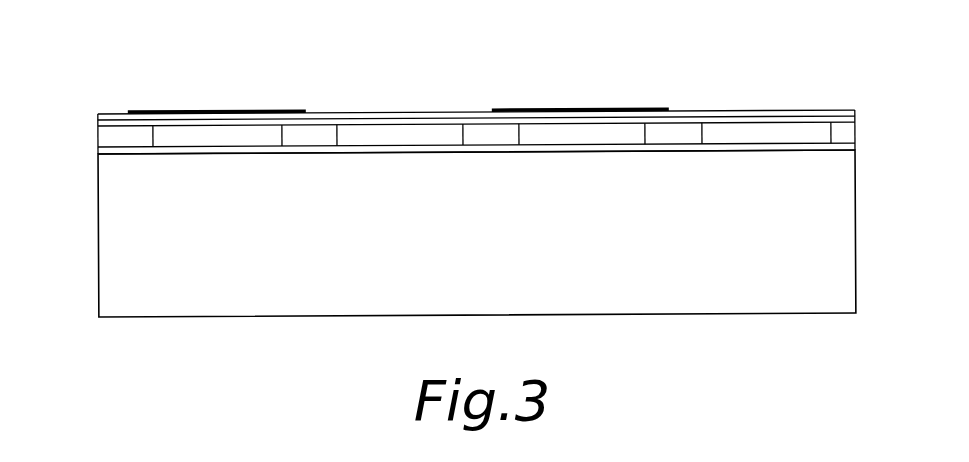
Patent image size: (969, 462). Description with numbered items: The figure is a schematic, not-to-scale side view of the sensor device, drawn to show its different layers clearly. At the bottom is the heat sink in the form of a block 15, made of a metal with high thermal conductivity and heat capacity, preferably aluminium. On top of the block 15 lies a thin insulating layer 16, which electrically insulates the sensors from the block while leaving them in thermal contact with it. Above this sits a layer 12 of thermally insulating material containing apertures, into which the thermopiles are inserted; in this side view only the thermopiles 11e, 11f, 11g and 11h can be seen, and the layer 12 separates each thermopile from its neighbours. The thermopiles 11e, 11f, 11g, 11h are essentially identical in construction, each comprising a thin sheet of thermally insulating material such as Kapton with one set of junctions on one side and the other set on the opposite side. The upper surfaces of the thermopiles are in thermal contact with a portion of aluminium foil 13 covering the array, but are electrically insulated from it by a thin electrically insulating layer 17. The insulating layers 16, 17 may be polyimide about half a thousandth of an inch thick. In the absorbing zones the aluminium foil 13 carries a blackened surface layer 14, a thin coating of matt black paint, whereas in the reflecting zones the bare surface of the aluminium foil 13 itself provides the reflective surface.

The thermopile 11e is at (265, 137).
The thermopile 11f is at (418, 130).
The thermopile 11g is at (548, 128).
The thermopile 11h is at (755, 132).
The layer of thermally insulating material 12 is at (117, 132).
The aluminium foil 13 is at (355, 117).
The blackened surface layer 14 is at (223, 110).
The block 15 is at (469, 239).
The insulating layer 16 is at (98, 153).
The electrically insulating layer 17 is at (98, 125).